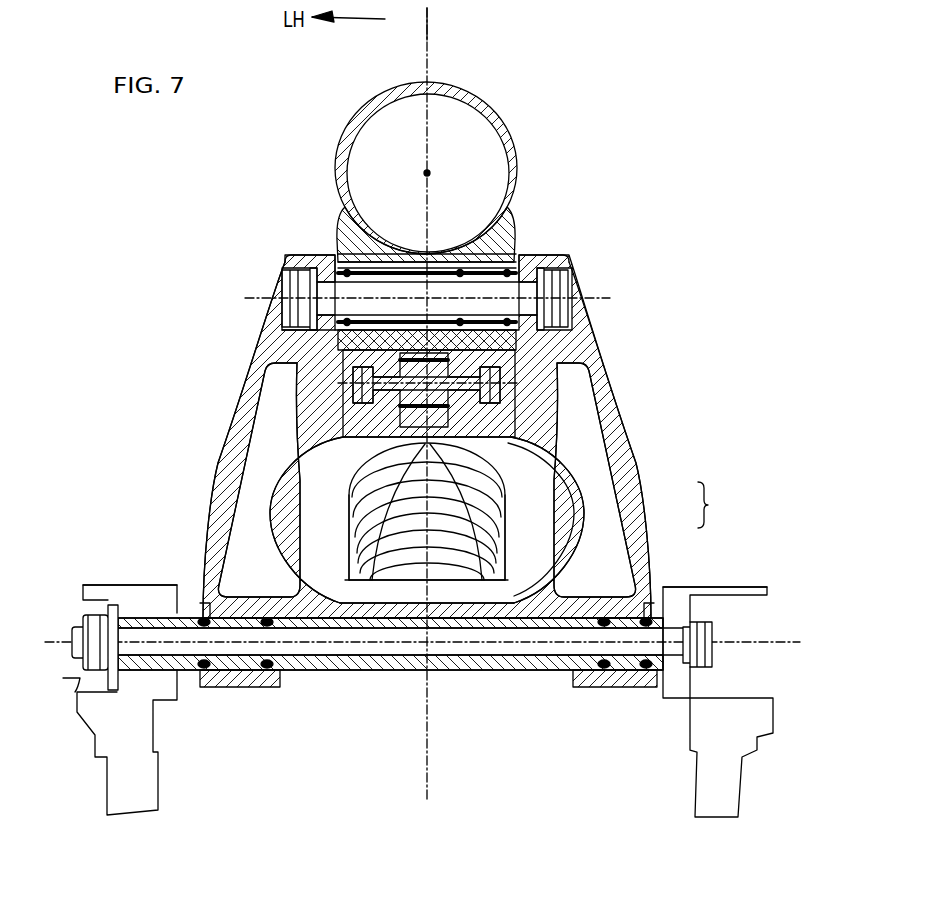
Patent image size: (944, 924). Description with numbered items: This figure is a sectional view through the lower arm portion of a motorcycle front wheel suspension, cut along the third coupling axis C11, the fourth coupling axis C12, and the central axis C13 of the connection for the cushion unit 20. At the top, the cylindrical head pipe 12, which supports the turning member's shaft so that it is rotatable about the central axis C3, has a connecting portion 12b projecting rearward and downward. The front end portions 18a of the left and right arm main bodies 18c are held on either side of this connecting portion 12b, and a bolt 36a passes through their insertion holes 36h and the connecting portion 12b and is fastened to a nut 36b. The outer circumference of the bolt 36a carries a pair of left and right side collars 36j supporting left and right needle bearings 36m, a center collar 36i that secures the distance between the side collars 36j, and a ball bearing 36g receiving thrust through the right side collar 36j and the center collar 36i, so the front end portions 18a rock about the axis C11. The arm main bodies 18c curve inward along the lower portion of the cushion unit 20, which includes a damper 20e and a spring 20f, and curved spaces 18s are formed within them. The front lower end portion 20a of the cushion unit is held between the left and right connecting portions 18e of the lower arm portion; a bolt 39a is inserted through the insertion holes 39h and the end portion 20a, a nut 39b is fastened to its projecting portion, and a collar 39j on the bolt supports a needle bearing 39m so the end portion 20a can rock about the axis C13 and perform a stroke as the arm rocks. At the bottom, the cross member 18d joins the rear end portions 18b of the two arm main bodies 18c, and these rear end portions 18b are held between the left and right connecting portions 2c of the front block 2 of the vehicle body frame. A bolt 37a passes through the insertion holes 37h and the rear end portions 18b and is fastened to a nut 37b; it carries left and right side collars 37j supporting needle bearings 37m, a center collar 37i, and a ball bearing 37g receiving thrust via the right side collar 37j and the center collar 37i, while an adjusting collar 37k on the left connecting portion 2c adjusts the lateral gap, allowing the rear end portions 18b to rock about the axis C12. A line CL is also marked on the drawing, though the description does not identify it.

The front block 2 is at (760, 733).
The connecting portions 2c is at (93, 600).
The head pipe 12 is at (514, 144).
The connecting portion 12b is at (560, 343).
The front end portions 18a is at (318, 255).
The rear end portions 18b is at (207, 598).
The arm main bodies 18c is at (217, 473).
The cross member 18d is at (434, 607).
The connecting portions 18e is at (372, 446).
The spaces 18s is at (238, 436).
The cushion unit 20 is at (715, 505).
The front lower end portion 20a is at (262, 355).
The damper 20e is at (572, 530).
The spring 20f is at (577, 505).
The bolt 36a is at (566, 284).
The nut 36b is at (280, 290).
The ball bearing 36g is at (498, 252).
The insertion hole 36h is at (520, 257).
The center collar 36i is at (356, 258).
The side collars 36j is at (343, 270).
The needle bearings 36m is at (345, 263).
The bolt 37a is at (715, 636).
The nut 37b is at (78, 672).
The ball bearing 37g is at (592, 690).
The insertion hole 37h is at (650, 690).
The center collar 37i is at (383, 672).
The side collars 37j is at (236, 688).
The adjusting collar 37k is at (157, 673).
The needle bearings 37m is at (257, 690).
The bolt 39a is at (522, 400).
The nut 39b is at (350, 480).
The insertion hole 39h is at (472, 449).
The collar 39j is at (464, 489).
The needle bearing 39m is at (387, 464).
The central axis C3 is at (430, 172).
The third coupling axis C11 is at (598, 298).
The fourth coupling axis C12 is at (735, 645).
The central axis C13 is at (542, 383).
The vehicle center line CL is at (430, 17).